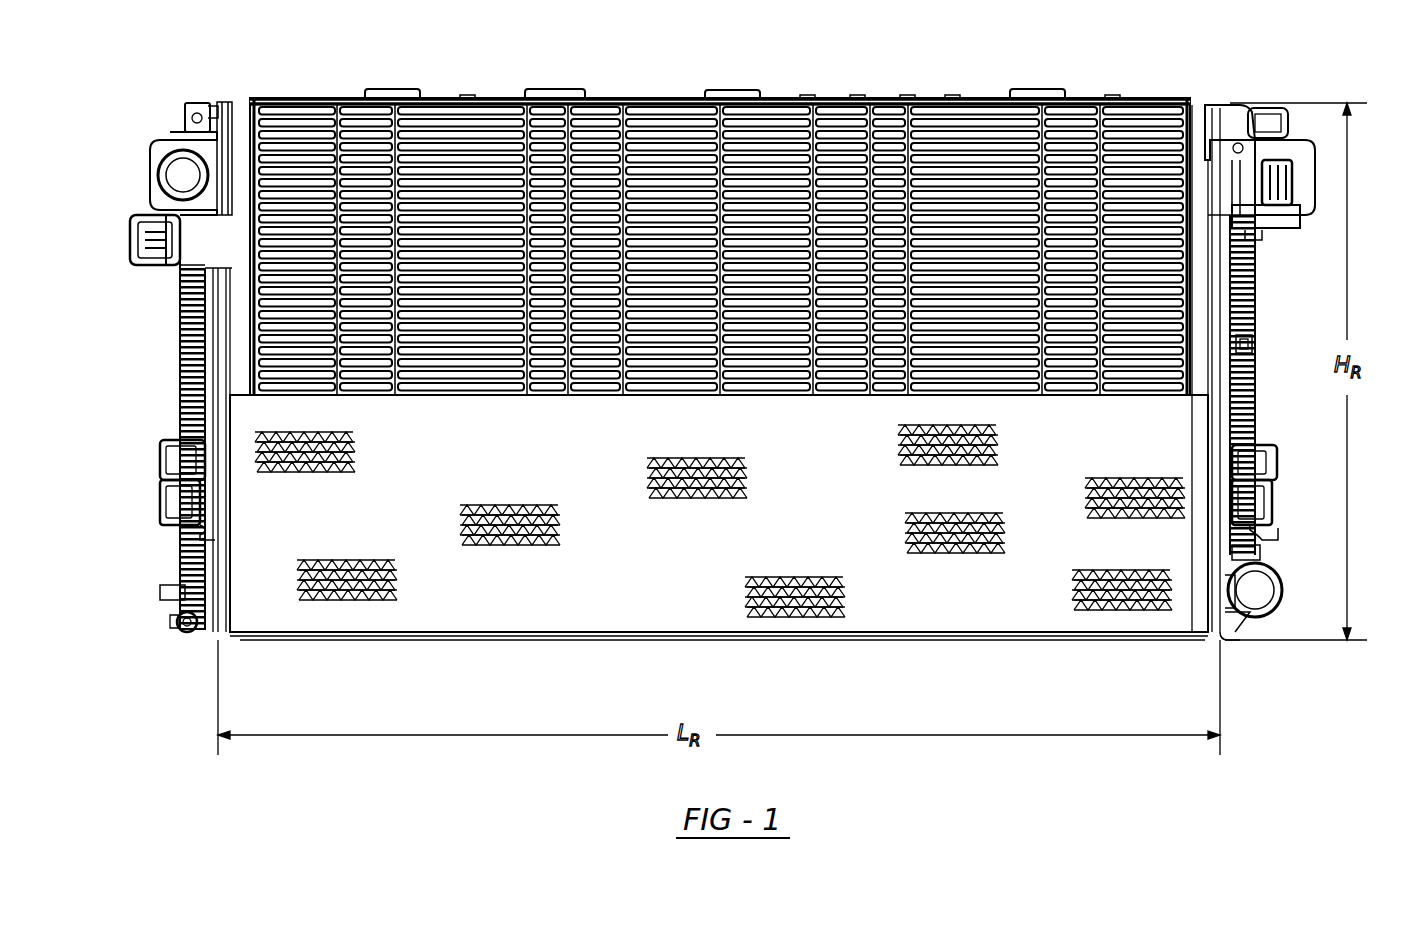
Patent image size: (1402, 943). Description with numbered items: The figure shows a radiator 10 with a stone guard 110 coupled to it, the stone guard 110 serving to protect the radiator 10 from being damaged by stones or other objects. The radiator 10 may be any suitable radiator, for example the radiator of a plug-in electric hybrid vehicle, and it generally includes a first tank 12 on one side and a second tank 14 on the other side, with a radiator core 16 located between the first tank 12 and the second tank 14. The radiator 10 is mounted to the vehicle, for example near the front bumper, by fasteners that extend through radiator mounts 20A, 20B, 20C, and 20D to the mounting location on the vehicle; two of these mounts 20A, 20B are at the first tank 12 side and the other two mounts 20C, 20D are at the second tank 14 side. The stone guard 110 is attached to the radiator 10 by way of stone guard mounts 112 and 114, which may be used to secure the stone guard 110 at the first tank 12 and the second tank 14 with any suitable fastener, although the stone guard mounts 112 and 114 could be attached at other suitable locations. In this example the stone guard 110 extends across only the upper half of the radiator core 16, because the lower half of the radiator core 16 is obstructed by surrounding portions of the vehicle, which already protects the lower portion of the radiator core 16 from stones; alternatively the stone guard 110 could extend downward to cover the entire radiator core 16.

The radiator 10 is at (520, 645).
The stone guard 110 is at (833, 95).
The stone guard mount 112 is at (200, 240).
The stone guard mount 114 is at (1290, 175).
The first tank 12 is at (182, 358).
The second tank 14 is at (1255, 390).
The radiator core 16 is at (955, 538).
The radiator mount 20A is at (140, 265).
The radiator mount 20B is at (160, 495).
The radiator mount 20C is at (1298, 218).
The radiator mount 20D is at (1275, 462).